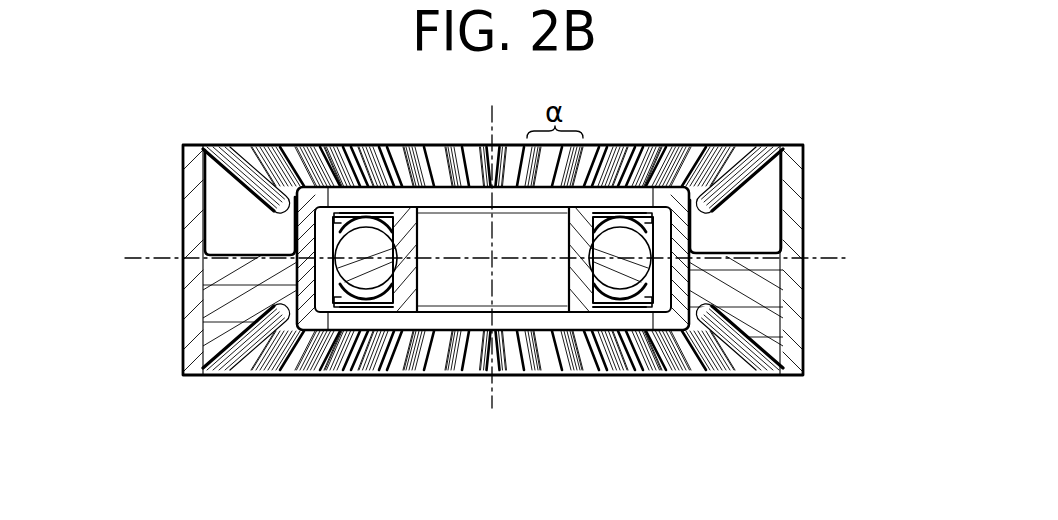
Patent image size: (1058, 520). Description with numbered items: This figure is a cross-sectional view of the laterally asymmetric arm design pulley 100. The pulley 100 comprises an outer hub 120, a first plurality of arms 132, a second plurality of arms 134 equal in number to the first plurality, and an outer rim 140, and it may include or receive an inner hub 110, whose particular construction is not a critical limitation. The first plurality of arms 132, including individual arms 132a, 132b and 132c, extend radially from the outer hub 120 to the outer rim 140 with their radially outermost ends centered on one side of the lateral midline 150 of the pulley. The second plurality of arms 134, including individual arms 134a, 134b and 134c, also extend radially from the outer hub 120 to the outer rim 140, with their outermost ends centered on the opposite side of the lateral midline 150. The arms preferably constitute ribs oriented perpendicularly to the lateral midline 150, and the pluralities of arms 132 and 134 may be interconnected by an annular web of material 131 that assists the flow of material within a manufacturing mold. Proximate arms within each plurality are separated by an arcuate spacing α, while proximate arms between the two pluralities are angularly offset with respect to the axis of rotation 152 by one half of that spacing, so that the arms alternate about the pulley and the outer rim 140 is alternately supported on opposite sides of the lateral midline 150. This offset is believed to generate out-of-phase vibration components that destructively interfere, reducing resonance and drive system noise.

The pulley 100 is at (152, 110).
The inner hub 110 is at (621, 312).
The outer hub 120 is at (672, 188).
The annular web of material 131 is at (730, 253).
The first plurality of arms 132 is at (775, 316).
The arm 132a is at (400, 358).
The arm 132b is at (360, 360).
The arm 132c is at (305, 358).
The second plurality of arms 134 is at (225, 217).
The arm 134a is at (415, 175).
The arm 134b is at (370, 178).
The arm 134c is at (320, 172).
The outer rim 140 is at (788, 187).
The lateral midline 150 is at (512, 258).
The axis of rotation 152 is at (489, 240).